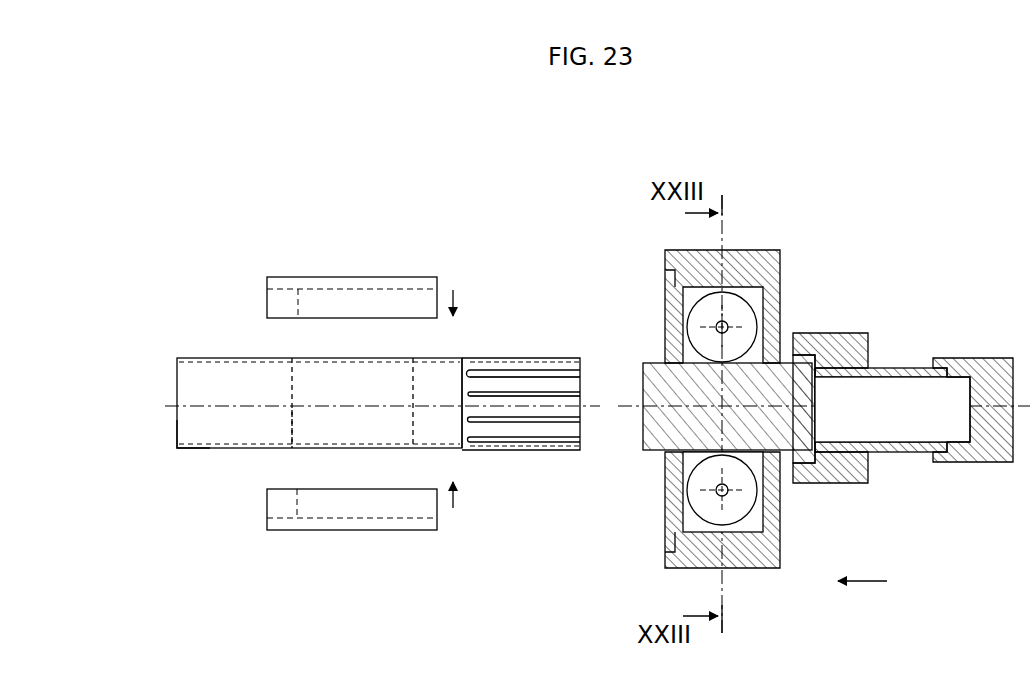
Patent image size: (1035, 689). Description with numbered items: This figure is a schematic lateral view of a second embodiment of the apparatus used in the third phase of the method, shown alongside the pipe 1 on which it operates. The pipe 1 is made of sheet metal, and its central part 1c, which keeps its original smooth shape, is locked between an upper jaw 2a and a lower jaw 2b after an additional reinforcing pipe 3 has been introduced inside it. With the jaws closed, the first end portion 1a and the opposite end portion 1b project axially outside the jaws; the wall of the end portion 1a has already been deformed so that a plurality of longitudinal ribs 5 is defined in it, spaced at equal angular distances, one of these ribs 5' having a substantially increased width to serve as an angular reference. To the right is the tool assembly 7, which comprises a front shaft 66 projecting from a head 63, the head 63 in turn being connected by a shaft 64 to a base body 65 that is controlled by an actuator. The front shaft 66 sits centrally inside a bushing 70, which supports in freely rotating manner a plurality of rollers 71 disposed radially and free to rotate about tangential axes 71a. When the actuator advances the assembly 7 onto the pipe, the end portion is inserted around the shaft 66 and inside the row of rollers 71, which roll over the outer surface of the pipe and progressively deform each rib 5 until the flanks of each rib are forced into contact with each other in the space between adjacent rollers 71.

The pipe 1 is at (228, 353).
The first end portion 1a is at (455, 452).
The opposite end portion 1b is at (186, 452).
The central part 1c is at (375, 387).
The upper jaw 2a is at (318, 287).
The lower jaw 2b is at (352, 532).
The reinforcing pipe 3 is at (302, 420).
The longitudinal ribs 5 is at (545, 436).
The rib of increased width 5' is at (523, 375).
The tool assembly 7 is at (924, 280).
The head 63 is at (836, 335).
The shaft 64 is at (905, 430).
The base body 65 is at (978, 360).
The front shaft 66 is at (651, 363).
The bushing 70 is at (770, 246).
The rollers 71 is at (690, 318).
The tangential axes 71a is at (730, 326).